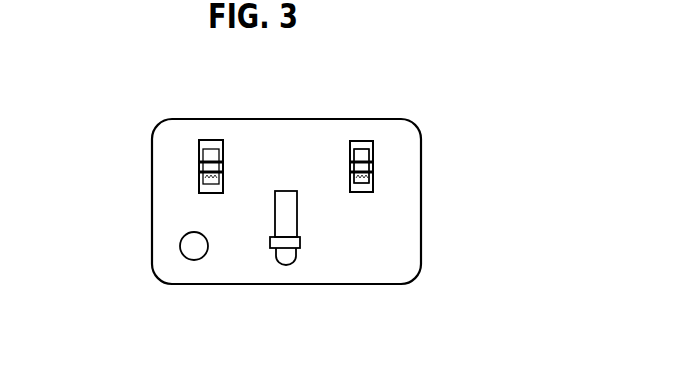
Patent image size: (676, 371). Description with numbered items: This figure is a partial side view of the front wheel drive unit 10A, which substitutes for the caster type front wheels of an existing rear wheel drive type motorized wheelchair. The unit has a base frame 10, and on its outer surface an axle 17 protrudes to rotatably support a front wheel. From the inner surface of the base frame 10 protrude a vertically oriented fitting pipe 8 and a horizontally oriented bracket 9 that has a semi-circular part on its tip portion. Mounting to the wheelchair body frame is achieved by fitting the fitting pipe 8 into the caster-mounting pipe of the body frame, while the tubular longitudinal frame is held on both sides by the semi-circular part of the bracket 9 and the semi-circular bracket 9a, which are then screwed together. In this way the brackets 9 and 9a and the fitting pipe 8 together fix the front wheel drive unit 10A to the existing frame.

The front wheel drive unit 10A is at (385, 294).
The base frame 10 is at (358, 141).
The bracket 9 is at (373, 157).
The semi-circular bracket 9a is at (373, 205).
The fitting pipe 8 is at (300, 224).
The axle 17 is at (194, 260).